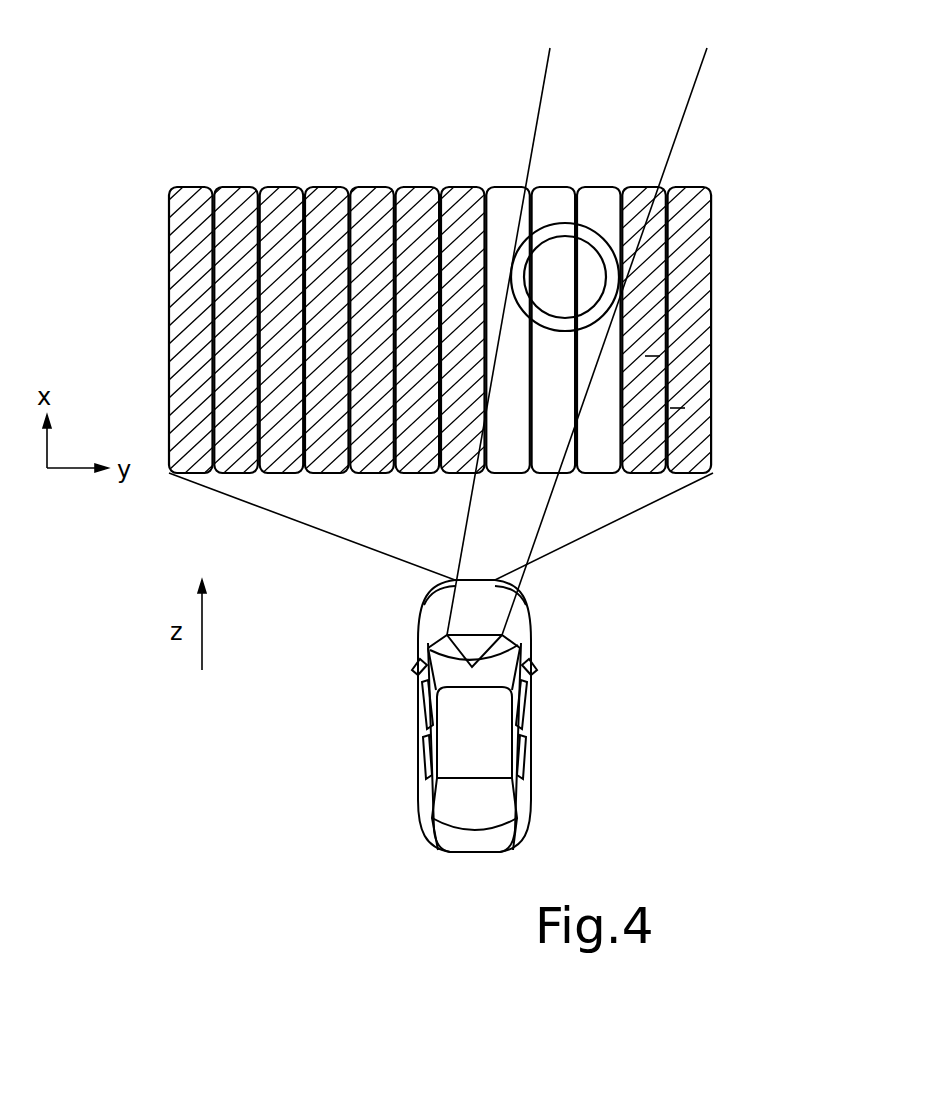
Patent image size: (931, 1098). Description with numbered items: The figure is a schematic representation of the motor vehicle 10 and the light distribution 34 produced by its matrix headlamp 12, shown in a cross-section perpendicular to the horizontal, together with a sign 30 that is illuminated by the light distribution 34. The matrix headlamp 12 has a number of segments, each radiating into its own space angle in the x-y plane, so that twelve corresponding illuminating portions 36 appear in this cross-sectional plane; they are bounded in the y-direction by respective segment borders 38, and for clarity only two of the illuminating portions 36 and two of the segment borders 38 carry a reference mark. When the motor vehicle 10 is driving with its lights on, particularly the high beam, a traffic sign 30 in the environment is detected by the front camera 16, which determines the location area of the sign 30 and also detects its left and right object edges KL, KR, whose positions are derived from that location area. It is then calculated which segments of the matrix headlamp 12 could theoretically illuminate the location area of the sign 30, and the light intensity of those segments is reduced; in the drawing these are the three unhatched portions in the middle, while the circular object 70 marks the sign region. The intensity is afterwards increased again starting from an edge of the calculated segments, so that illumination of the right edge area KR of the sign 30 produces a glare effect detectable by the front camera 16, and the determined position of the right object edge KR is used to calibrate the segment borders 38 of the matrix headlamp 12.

The motor vehicle 10 is at (533, 640).
The matrix headlamp 12 is at (406, 576).
The front camera 16 is at (513, 684).
The sign 30 is at (620, 288).
The light distribution 34 is at (760, 100).
The illuminating portions 36 is at (645, 356).
The segment borders 38 is at (670, 408).
The reference object 70 is at (565, 277).
The left object edge KL is at (548, 72).
The right object edge KR is at (705, 72).